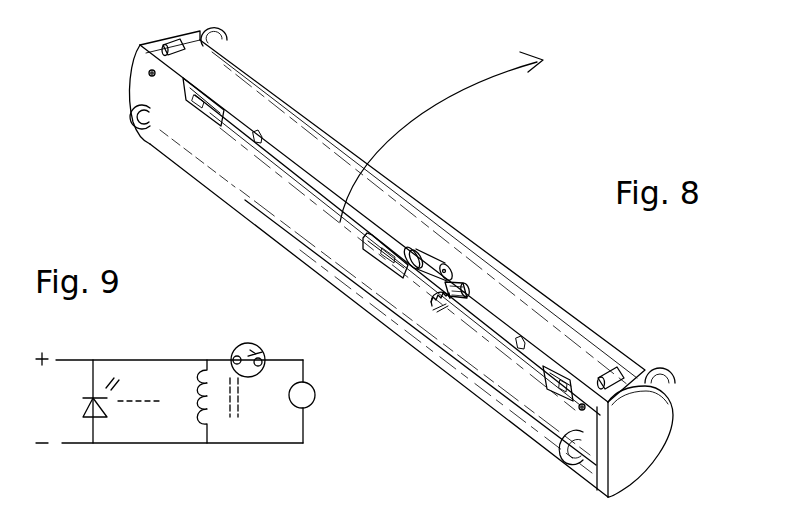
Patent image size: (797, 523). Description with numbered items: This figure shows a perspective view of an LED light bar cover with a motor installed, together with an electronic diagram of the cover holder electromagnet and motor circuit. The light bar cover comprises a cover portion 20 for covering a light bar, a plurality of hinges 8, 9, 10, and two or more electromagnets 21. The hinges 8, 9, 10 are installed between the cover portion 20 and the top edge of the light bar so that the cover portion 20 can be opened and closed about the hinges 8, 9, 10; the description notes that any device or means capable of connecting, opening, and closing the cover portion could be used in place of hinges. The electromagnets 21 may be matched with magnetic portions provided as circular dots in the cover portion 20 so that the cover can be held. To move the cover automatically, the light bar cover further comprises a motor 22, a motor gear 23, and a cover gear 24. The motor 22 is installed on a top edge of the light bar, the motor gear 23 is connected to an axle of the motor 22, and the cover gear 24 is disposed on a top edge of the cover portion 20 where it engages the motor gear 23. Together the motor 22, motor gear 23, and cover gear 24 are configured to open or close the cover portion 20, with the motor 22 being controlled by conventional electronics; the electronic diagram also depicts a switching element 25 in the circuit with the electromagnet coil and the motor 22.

In FIG. 8, the hinge 8 is at (187, 97).
In FIG. 8, the hinge 9 is at (572, 370).
In FIG. 8, the hinge 10 is at (385, 247).
In FIG. 8, the cover portion 20 is at (210, 152).
In FIG. 8, the electromagnet 21 is at (178, 48).
In FIG. 8, the motor 22 is at (425, 252).
In FIG. 9, the motor 22 is at (310, 407).
In FIG. 8, the motor gear 23 is at (467, 287).
In FIG. 8, the cover gear 24 is at (437, 312).
In FIG. 9, the switch 25 is at (238, 347).